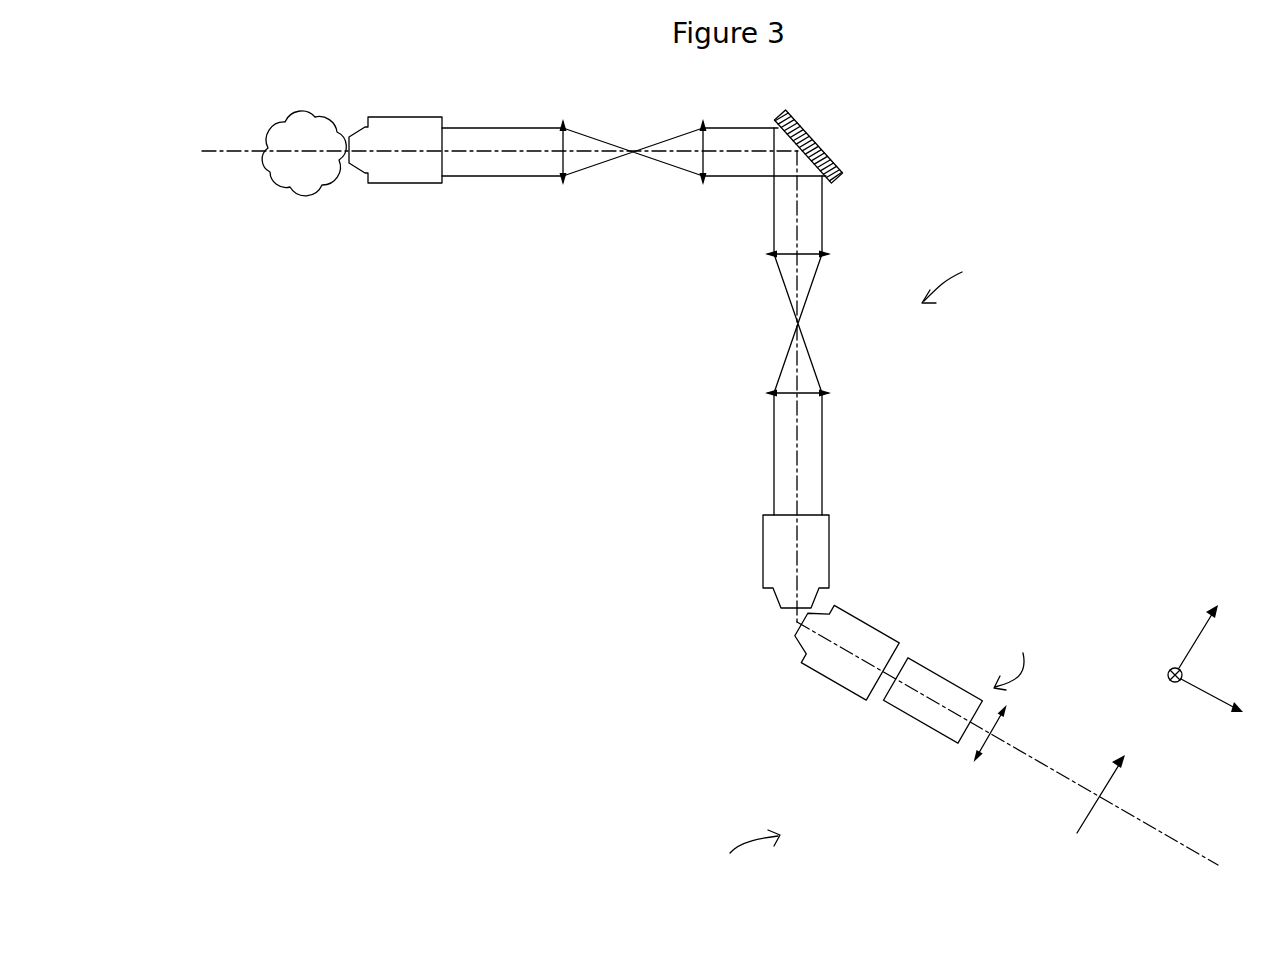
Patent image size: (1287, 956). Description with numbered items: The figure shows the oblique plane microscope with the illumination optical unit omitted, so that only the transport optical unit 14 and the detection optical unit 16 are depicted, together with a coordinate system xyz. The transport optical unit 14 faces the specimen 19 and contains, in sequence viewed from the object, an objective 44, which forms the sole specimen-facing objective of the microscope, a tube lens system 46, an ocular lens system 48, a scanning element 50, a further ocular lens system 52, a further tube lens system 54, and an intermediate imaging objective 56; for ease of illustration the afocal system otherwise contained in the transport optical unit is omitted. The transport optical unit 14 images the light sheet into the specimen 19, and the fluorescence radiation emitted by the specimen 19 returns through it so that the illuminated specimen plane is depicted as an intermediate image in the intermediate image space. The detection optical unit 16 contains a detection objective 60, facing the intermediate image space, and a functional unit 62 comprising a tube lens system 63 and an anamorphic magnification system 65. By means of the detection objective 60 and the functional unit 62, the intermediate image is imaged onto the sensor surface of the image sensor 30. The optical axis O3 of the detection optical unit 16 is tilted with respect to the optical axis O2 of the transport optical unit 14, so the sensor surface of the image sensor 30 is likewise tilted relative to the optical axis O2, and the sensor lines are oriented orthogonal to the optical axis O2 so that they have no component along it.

The transport optical unit 14 is at (949, 270).
The detection optical unit 16 is at (741, 856).
The specimen 19 is at (303, 189).
The image sensor 30 is at (1122, 771).
The objective 44 is at (407, 117).
The tube lens system 46 is at (562, 124).
The ocular lens system 48 is at (703, 122).
The scanning element 50 is at (842, 162).
The ocular lens system 52 is at (770, 256).
The tube lens system 54 is at (770, 395).
The intermediate imaging objective 56 is at (762, 551).
The detection objective 60 is at (813, 677).
The functional unit 62 is at (1023, 657).
The tube lens system 63 is at (990, 750).
The anamorphic magnification system 65 is at (927, 730).
The optical axis of the transport optical unit O2 is at (798, 470).
The optical axis of the detection optical unit O3 is at (1200, 853).
The coordinate system xyz is at (1208, 653).